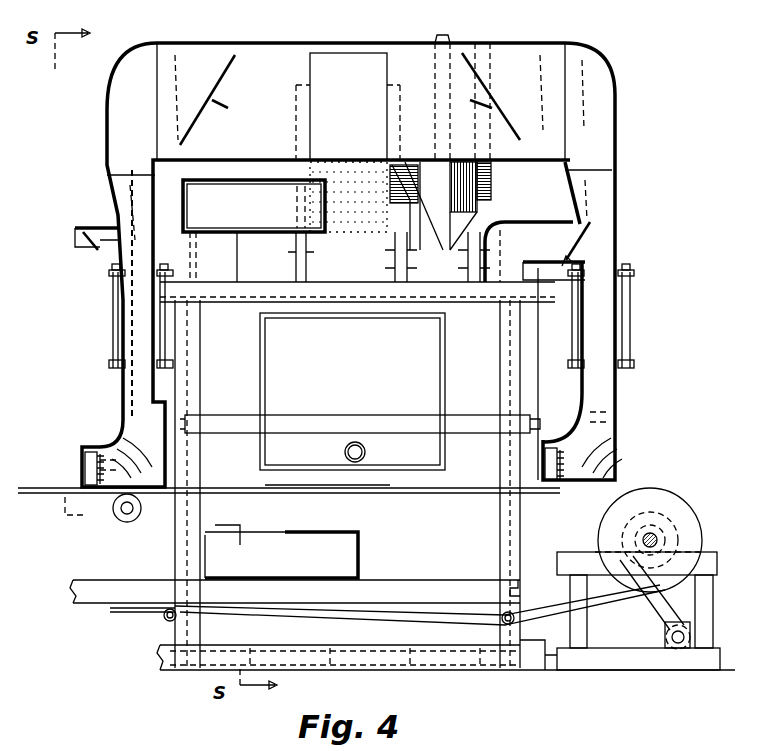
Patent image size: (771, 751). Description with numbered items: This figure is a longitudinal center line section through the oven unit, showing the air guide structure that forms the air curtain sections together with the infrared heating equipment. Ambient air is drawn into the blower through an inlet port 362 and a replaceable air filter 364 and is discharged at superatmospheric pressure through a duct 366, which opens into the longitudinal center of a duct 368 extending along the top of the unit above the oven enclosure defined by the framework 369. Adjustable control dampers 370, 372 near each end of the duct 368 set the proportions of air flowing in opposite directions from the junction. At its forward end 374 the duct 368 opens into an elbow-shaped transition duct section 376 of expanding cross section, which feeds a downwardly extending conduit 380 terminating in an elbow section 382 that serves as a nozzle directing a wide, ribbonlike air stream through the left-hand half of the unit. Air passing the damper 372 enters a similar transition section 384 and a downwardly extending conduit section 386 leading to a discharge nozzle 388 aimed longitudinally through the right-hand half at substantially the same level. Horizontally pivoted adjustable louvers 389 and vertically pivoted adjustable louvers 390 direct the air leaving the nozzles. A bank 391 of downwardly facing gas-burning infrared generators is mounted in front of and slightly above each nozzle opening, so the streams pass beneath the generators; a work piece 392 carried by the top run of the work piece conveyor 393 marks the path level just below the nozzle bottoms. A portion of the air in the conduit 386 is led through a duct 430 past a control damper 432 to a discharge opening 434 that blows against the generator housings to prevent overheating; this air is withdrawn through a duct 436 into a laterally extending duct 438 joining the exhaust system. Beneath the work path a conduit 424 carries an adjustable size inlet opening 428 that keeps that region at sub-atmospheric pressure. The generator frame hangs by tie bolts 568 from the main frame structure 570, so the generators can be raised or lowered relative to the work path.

The elbow-shaped transition duct section 376 is at (146, 47).
The forward end 374 is at (157, 126).
The elbow-shaped transition section 384 is at (616, 149).
The duct 368 is at (224, 57).
The adjustable control damper 370 is at (226, 104).
The adjustable control damper 372 is at (489, 121).
The duct 366 is at (364, 84).
The inlet port 362 is at (494, 181).
The replaceable air filter 364 is at (443, 246).
The duct 430 is at (555, 222).
The control damper 432 is at (78, 238).
The laterally extending duct 438 is at (238, 184).
The duct 436 is at (237, 245).
The main frame structure 570 is at (271, 275).
The downwardly extending conduit 380 is at (135, 331).
The downwardly extending conduit section 386 is at (630, 333).
The elbow section 382 is at (91, 447).
The discharge nozzle 388 is at (546, 440).
The vertically pivoted adjustable louvers 390 is at (86, 460).
The discharge opening 434 is at (489, 288).
The tie bolts 568 is at (200, 362).
The framework 369 is at (174, 551).
The bank of infrared generators 391 is at (485, 434).
The work piece 392 is at (373, 484).
The work piece conveyor 393 is at (400, 494).
The horizontally pivoted adjustable louvers 389 is at (97, 488).
The adjustable size inlet opening 428 is at (270, 537).
The conduit 424 is at (360, 554).